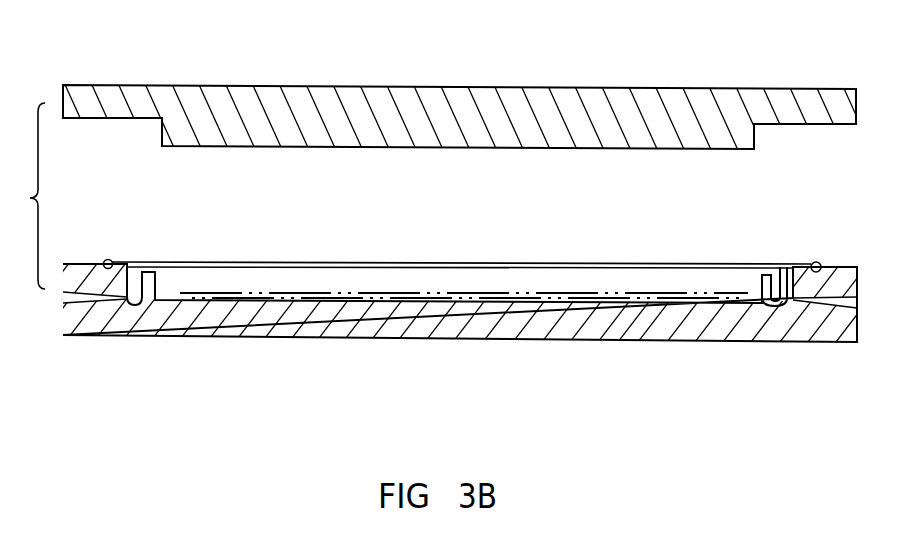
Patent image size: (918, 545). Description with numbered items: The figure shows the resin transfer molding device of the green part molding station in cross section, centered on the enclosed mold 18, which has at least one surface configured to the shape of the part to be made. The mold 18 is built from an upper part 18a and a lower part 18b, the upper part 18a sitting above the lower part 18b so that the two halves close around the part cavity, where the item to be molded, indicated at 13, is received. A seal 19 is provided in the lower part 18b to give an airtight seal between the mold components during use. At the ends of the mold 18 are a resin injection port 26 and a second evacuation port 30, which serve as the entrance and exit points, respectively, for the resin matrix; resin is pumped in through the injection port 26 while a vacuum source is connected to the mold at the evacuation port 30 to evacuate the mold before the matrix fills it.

The mold 18 is at (818, 196).
The upper part 18a is at (688, 88).
The lower part 18b is at (592, 340).
The seal 19 is at (190, 262).
The imaging plate 13 is at (288, 298).
The resin injection port 26 is at (857, 310).
The second evacuation port 30 is at (63, 300).